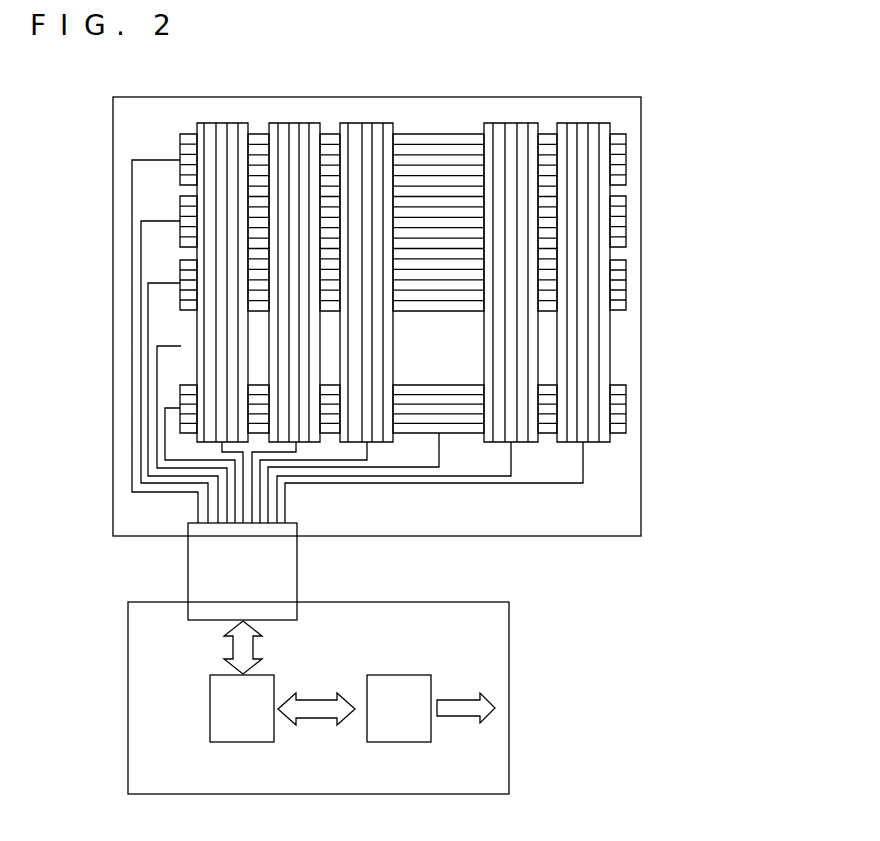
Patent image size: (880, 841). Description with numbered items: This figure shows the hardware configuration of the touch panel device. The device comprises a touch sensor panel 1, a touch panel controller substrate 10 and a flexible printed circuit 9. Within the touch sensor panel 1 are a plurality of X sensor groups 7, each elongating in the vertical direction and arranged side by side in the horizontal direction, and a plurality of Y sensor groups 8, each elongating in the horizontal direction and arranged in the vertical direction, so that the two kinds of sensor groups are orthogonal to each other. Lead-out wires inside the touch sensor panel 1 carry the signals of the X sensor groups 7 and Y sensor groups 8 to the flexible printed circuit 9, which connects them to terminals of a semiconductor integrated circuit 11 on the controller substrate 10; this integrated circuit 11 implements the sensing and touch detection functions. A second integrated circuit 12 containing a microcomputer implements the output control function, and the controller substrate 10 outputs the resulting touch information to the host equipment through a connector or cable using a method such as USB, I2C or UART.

The touch sensor panel 1 is at (641, 117).
The X sensor groups 7 is at (368, 123).
The Y sensor groups 8 is at (626, 222).
The flexible printed circuit (FPC) 9 is at (297, 570).
The touch panel controller substrate 10 is at (128, 620).
The semiconductor integrated circuit 11 is at (265, 675).
The integrated circuit 12 is at (423, 675).